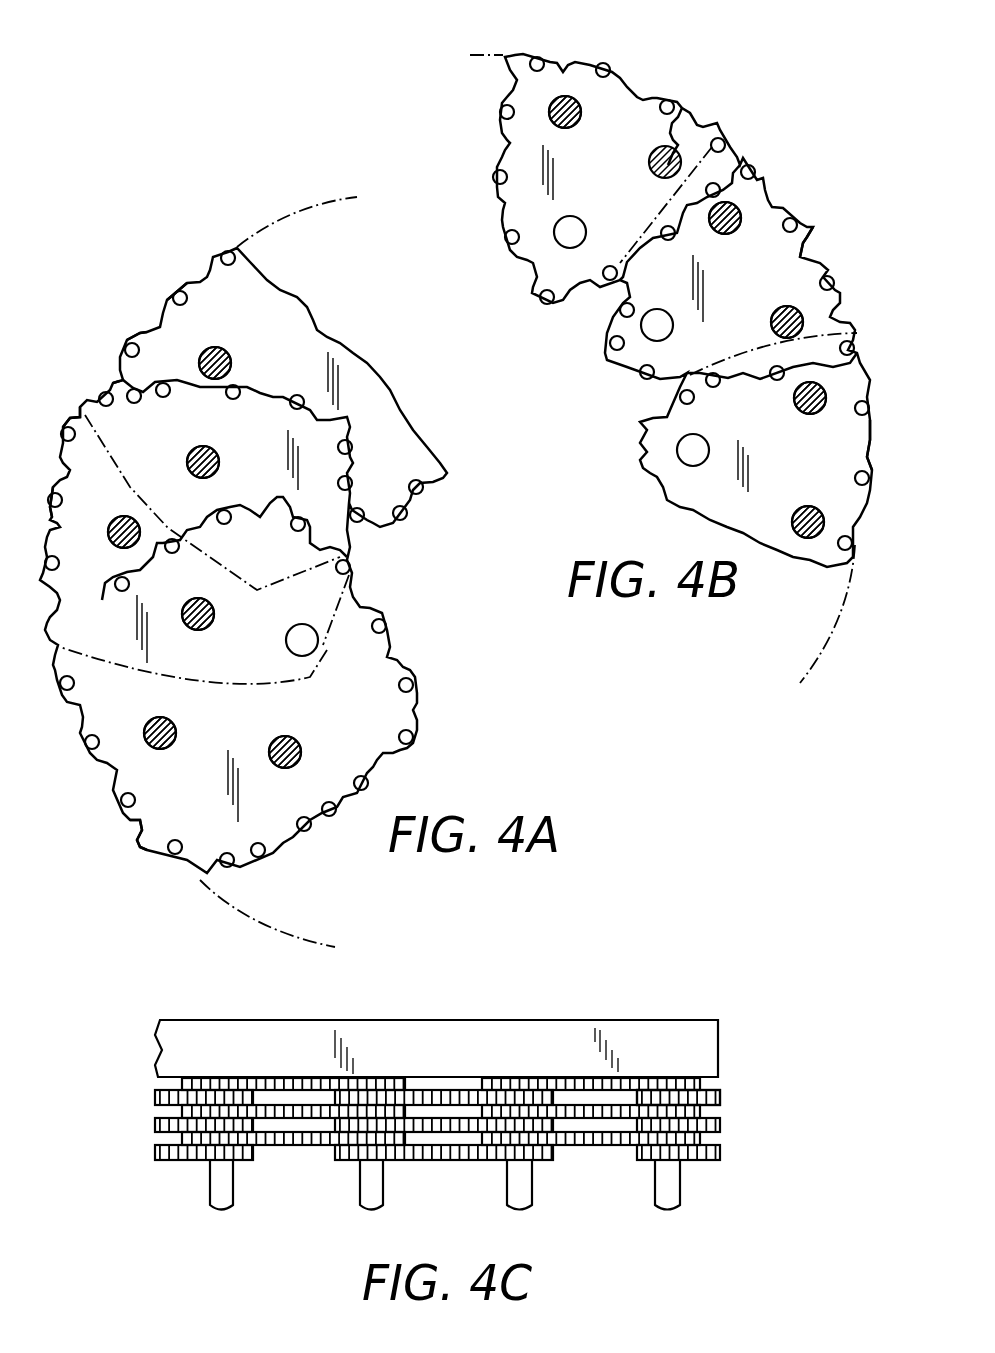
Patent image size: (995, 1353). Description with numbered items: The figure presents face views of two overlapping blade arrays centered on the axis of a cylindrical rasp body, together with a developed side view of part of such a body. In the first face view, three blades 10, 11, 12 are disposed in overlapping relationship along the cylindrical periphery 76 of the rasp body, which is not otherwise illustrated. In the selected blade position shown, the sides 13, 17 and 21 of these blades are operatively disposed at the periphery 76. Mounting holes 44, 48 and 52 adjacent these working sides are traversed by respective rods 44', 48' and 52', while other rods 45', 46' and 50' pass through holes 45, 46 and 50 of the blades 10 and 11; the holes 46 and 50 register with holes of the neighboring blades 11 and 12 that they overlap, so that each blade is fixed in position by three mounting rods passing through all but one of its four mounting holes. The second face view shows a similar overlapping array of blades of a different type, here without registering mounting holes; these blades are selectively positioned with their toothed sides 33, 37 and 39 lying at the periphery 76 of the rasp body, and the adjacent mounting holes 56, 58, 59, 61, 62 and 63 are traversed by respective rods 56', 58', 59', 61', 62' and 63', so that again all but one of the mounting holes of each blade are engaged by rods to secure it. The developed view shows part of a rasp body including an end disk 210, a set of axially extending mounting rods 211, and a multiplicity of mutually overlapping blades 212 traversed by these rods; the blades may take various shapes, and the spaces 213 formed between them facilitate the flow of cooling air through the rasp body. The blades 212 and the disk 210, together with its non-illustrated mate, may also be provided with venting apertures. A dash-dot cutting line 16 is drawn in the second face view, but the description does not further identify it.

In FIG. 4A, the blade 10 is at (97, 727).
In FIG. 4A, the blade 11 is at (57, 518).
In FIG. 4A, the blade 12 is at (127, 345).
In FIG. 4A, the side 13 is at (148, 840).
In FIG. 4A, the side 17 is at (68, 432).
In FIG. 4A, the side 21 is at (162, 296).
In FIG. 4A, the cylindrical periphery 76 is at (278, 918).
In FIG. 4B, the cutting line 16 is at (833, 607).
In FIG. 4B, the toothed side 33 is at (655, 92).
In FIG. 4B, the toothed side 37 is at (821, 238).
In FIG. 4B, the toothed side 39 is at (843, 445).
In FIG. 4A, the mounting hole 44 is at (168, 750).
In FIG. 4A, the rod 44' is at (181, 724).
In FIG. 4A, the mounting hole 45 is at (272, 744).
In FIG. 4A, the rod 45' is at (311, 746).
In FIG. 4A, the mounting hole 46 is at (211, 631).
In FIG. 4A, the rod 46' is at (223, 610).
In FIG. 4A, the mounting hole 48 is at (116, 523).
In FIG. 4A, the rod 48' is at (110, 543).
In FIG. 4A, the mounting hole 50 is at (221, 452).
In FIG. 4A, the rod 50' is at (188, 451).
In FIG. 4A, the mounting hole 52 is at (204, 348).
In FIG. 4A, the rod 52' is at (244, 349).
In FIG. 4B, the mounting hole 56 is at (571, 74).
In FIG. 4B, the rod 56' is at (580, 128).
In FIG. 4B, the mounting hole 58 is at (698, 130).
In FIG. 4B, the rod 58' is at (640, 173).
In FIG. 4B, the mounting hole 59 is at (763, 202).
In FIG. 4B, the rod 59' is at (735, 233).
In FIG. 4B, the mounting hole 61 is at (787, 301).
In FIG. 4B, the rod 61' is at (764, 320).
In FIG. 4B, the mounting hole 62 is at (790, 413).
In FIG. 4B, the rod 62' is at (785, 398).
In FIG. 4B, the mounting hole 63 is at (784, 522).
In FIG. 4B, the rod 63' is at (820, 506).
In FIG. 4C, the end disk 210 is at (690, 1045).
In FIG. 4C, the mounting rods 211 is at (370, 1186).
In FIG. 4C, the blades 212 is at (700, 1085).
In FIG. 4C, the spaces 213 is at (603, 1097).